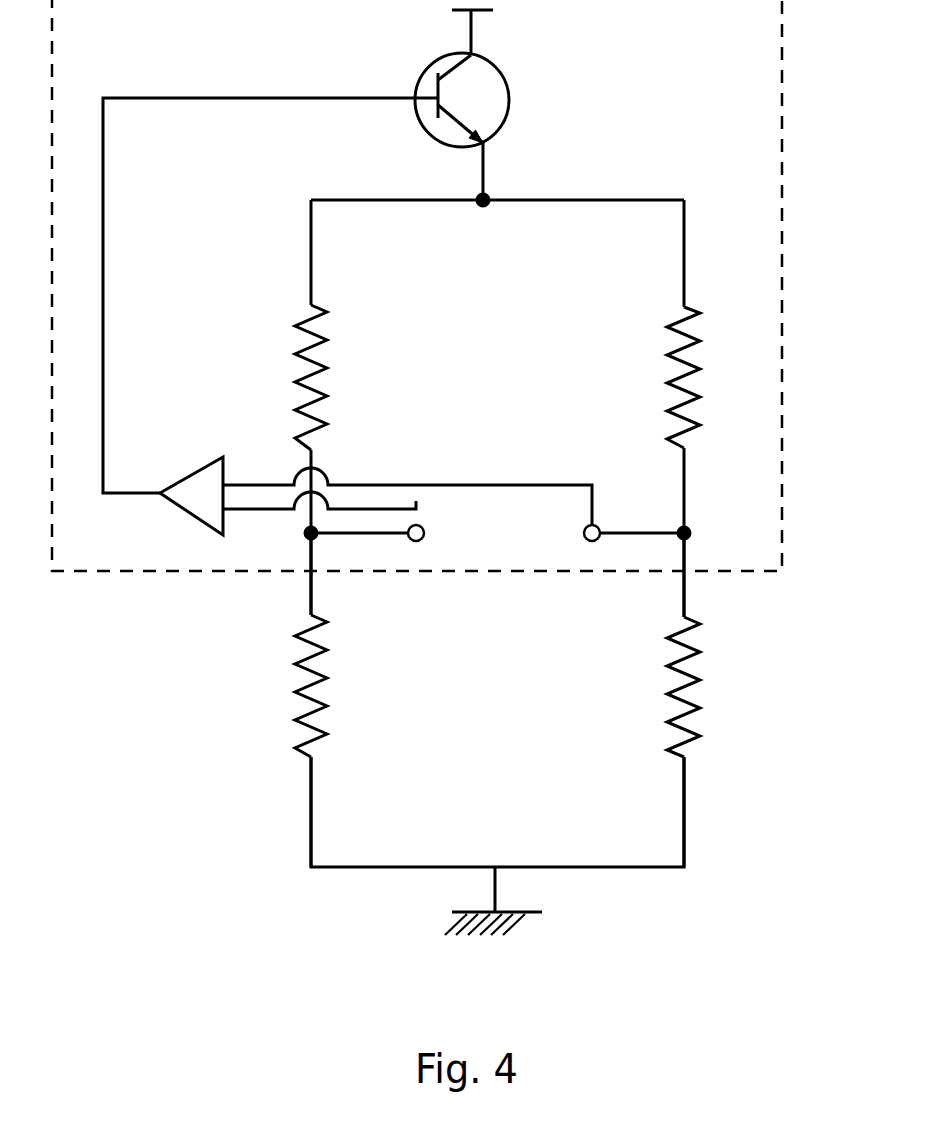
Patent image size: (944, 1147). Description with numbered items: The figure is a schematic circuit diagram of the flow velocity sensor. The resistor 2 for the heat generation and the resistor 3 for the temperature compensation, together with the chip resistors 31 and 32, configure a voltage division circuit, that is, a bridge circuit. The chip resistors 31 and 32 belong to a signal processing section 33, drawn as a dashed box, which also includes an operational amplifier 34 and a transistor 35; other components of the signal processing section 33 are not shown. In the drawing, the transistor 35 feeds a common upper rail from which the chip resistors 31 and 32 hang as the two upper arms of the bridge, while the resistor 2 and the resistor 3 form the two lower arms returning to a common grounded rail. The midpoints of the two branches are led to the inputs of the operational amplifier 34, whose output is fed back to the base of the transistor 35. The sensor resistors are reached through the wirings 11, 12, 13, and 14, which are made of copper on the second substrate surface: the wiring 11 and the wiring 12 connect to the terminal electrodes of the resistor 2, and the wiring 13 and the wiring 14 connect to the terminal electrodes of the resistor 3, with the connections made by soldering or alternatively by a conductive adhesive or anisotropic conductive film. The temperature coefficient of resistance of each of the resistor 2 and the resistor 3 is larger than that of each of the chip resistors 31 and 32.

The resistor for heat generation 2 is at (295, 690).
The resistor for temperature compensation 3 is at (700, 725).
The wiring 11 is at (310, 612).
The wiring 12 is at (310, 822).
The wiring 13 is at (685, 580).
The wiring 14 is at (686, 790).
The chip resistor 31 is at (292, 380).
The chip resistor 32 is at (700, 398).
The signal processing section 33 is at (782, 205).
The operational amplifier 34 is at (215, 457).
The transistor 35 is at (418, 85).